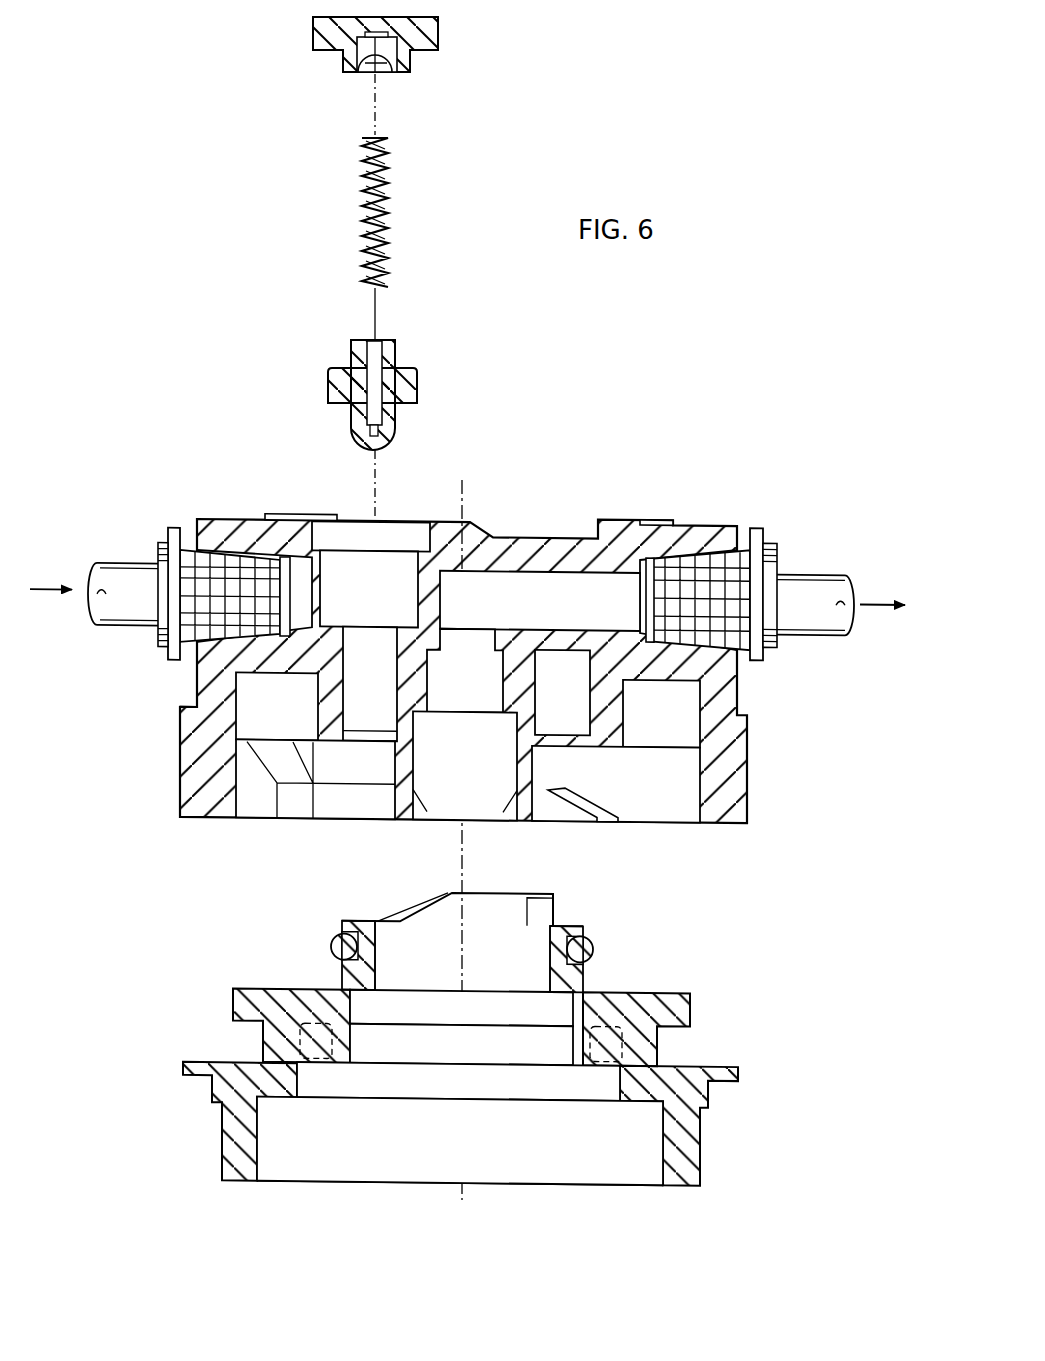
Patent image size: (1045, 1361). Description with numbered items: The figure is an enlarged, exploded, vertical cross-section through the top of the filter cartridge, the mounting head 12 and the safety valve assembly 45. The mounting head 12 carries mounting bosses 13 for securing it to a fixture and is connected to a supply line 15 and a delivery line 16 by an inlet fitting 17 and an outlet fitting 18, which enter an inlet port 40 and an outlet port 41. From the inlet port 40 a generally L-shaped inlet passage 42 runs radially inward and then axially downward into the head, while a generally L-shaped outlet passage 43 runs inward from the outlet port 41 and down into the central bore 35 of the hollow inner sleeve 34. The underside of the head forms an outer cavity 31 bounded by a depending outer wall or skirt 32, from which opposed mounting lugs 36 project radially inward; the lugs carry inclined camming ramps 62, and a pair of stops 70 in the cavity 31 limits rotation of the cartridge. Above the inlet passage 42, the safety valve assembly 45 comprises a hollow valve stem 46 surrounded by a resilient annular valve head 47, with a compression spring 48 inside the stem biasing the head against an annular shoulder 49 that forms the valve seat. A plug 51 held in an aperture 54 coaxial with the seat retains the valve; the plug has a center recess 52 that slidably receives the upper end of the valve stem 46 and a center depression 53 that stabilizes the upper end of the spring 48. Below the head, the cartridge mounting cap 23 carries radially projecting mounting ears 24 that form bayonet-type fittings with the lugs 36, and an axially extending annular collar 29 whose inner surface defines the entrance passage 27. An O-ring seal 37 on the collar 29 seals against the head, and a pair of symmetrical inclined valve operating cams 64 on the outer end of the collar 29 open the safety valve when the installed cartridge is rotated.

The mounting head 12 is at (753, 746).
The mounting boss 13 is at (623, 518).
The supply line 15 is at (122, 578).
The delivery line 16 is at (800, 577).
The inlet fitting 17 is at (161, 547).
The outlet fitting 18 is at (774, 561).
The mounting cap 23 is at (737, 1068).
The mounting ears 24 is at (233, 1016).
The entrance passage 27 is at (585, 712).
The annular collar 29 is at (585, 977).
The outer cavity 31 is at (230, 770).
The outer depending wall 32 is at (180, 788).
The inner sleeve 34 is at (528, 765).
The central bore 35 is at (517, 770).
The mounting lugs 36 is at (562, 810).
The O-ring seal 37 is at (323, 957).
The inlet port 40 is at (237, 577).
The outlet port 41 is at (694, 563).
The inlet passage 42 is at (312, 576).
The outlet passage 43 is at (517, 583).
The safety valve assembly 45 is at (300, 236).
The valve stem 46 is at (395, 349).
The valve head 47 is at (418, 387).
The compression spring 48 is at (383, 212).
The annular shoulder 49 is at (405, 622).
The plug 51 is at (428, 34).
The center recess 52 is at (386, 70).
The center depression 53 is at (362, 70).
The aperture 54 is at (430, 543).
The camming ramps 62 is at (600, 813).
The valve operating cams 64 is at (422, 913).
The stops 70 is at (316, 763).